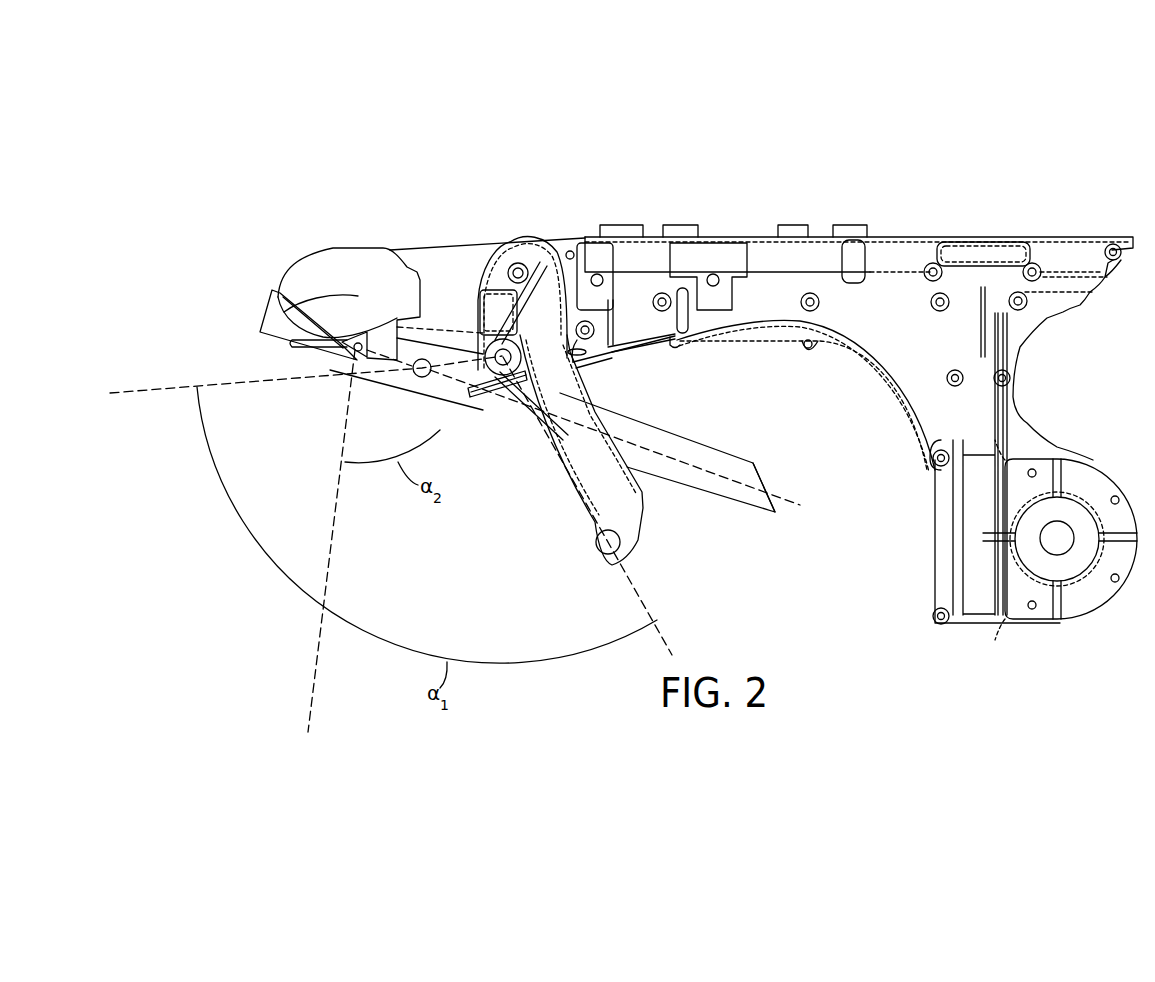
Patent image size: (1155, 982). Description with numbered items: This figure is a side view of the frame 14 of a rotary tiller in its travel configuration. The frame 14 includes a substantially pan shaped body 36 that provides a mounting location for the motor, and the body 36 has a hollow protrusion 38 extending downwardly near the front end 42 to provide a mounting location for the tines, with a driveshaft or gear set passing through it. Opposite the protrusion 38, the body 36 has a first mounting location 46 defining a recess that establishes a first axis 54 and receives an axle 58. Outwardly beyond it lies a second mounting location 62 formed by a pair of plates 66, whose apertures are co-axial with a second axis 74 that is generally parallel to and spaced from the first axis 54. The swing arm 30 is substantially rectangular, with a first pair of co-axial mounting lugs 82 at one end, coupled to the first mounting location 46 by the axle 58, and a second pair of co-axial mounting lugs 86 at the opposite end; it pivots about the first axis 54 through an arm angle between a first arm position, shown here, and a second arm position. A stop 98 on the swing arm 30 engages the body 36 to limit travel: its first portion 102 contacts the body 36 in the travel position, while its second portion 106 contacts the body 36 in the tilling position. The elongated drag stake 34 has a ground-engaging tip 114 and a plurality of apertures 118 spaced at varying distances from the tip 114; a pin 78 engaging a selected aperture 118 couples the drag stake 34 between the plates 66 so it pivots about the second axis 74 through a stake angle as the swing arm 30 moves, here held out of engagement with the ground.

The frame 14 is at (990, 196).
The swing arm 30 is at (620, 505).
The drag stake 34 is at (703, 478).
The body 36 is at (894, 246).
The protrusion 38 is at (975, 515).
The front end 42 is at (1090, 267).
The first mounting location 46 is at (492, 310).
The first axis 54 is at (504, 352).
The axle 58 is at (518, 364).
The second mounting location 62 is at (327, 283).
The plates 66 is at (368, 263).
The second axis 74 is at (381, 317).
The pin 78 is at (267, 302).
The first pair of mounting lugs 82 is at (478, 345).
The second pair of mounting lugs 86 is at (596, 544).
The stop 98 is at (530, 418).
The first portion of the stop 102 is at (583, 368).
The second portion of the stop 106 is at (483, 405).
The tip 114 is at (770, 482).
The apertures 118 is at (422, 380).